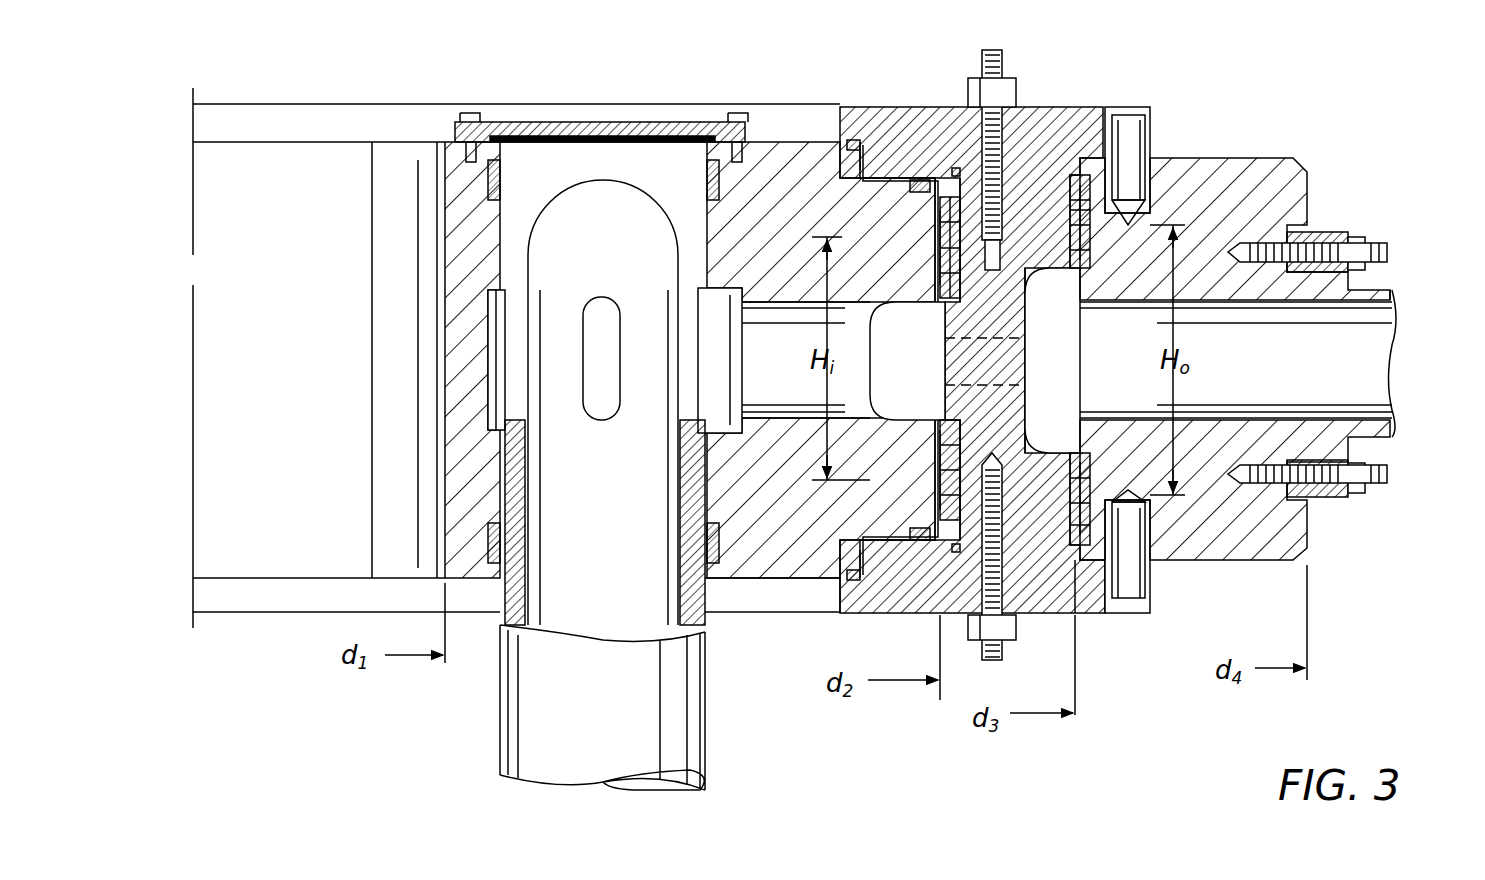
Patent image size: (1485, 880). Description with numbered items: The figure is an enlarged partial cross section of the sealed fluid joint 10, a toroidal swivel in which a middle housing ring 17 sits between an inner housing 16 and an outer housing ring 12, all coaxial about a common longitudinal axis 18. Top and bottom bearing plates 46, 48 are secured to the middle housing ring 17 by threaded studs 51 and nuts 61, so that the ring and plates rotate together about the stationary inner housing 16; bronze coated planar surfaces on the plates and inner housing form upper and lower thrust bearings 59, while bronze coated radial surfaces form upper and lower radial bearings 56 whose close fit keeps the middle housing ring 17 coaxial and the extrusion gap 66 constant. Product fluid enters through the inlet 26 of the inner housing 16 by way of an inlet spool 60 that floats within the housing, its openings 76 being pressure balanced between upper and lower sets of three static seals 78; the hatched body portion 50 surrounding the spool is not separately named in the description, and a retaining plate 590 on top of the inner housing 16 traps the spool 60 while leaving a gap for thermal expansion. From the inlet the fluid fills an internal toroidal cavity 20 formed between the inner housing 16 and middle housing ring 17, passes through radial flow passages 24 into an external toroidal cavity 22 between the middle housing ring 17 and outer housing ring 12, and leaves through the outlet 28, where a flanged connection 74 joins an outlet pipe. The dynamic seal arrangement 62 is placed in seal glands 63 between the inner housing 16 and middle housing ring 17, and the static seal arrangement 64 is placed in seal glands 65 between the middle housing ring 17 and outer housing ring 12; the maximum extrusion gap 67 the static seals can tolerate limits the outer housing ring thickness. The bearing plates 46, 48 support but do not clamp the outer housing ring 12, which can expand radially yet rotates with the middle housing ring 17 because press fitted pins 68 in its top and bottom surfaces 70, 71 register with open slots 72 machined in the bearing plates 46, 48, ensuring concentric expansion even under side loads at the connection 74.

The sealed fluid joint 10 is at (1400, 280).
The outer housing ring 12 is at (1235, 351).
The inner housing 16 is at (765, 595).
The middle housing ring 17 is at (1032, 612).
The common longitudinal axis 18 is at (193, 316).
The internal toroidal cavity 20 is at (885, 412).
The external toroidal cavity 22 is at (1070, 332).
The radial flow passages 24 is at (1015, 356).
The inlet 26 is at (765, 302).
The outlet 28 is at (1270, 378).
The top bearing plate 46 is at (1078, 107).
The bottom bearing plate 48 is at (1082, 615).
The cylinder body 50 is at (500, 466).
The threaded studs 51 is at (1000, 142).
The radial bearings 56 is at (858, 164).
The thrust bearings 59 is at (890, 176).
The inlet spool 60 is at (500, 706).
The nuts 61 is at (975, 90).
The dynamic seal arrangement 62 is at (935, 235).
The dynamic seal glands 63 is at (968, 268).
The static seal arrangement 64 is at (1095, 257).
The static seal glands 65 is at (1086, 238).
The dynamic extrusion gap 66 is at (950, 258).
The extrusion gap 67 is at (1086, 212).
The pins 68 is at (1128, 125).
The outer housing ring top surface 70 is at (1212, 158).
The outer housing ring bottom surface 71 is at (1258, 560).
The open slots 72 is at (1150, 125).
The flanged connection 74 is at (1335, 240).
The openings 76 is at (600, 300).
The static seals 78 is at (490, 180).
The retaining plate 590 is at (547, 120).